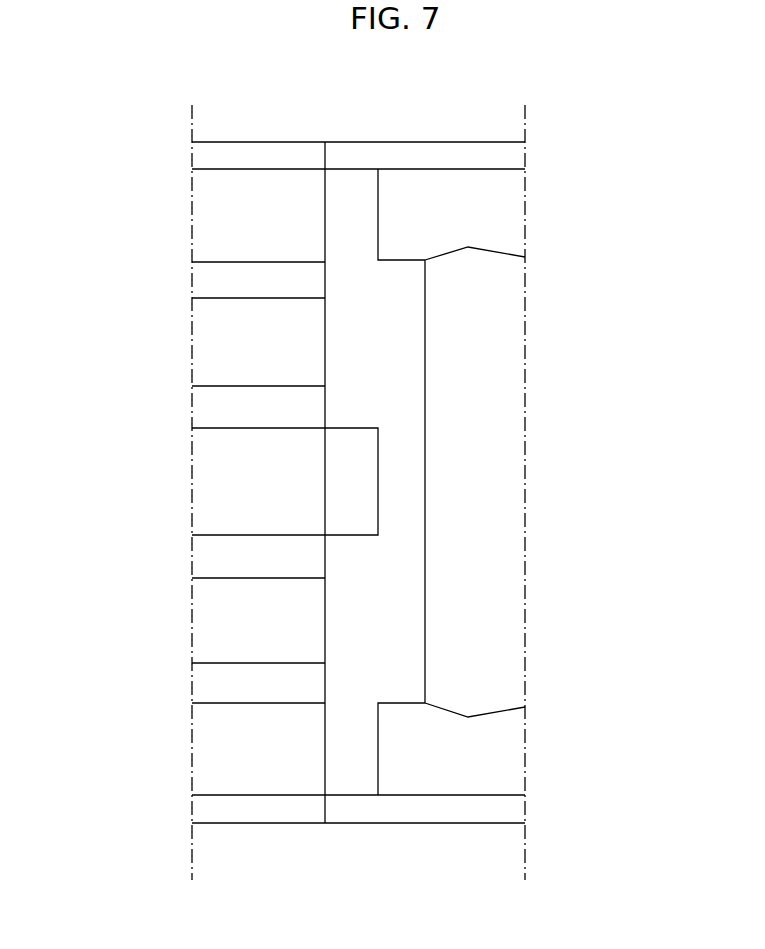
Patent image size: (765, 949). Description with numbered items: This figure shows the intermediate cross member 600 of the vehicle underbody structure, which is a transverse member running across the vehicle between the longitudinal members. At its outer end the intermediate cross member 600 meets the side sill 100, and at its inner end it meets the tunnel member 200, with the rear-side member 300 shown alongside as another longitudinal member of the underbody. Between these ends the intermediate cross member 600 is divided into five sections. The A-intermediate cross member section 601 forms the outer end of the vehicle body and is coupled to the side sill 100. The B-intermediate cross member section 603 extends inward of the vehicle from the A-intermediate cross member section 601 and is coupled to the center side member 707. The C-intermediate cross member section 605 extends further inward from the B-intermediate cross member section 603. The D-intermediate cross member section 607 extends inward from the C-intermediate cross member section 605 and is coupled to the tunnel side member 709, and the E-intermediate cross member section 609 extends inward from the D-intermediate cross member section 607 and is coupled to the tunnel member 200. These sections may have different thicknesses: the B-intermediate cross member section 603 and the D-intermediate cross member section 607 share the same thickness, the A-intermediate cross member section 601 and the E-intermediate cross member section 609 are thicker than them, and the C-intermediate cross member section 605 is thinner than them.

The side sill 100 is at (207, 155).
The tunnel member 200 is at (220, 482).
The rear-side member 300 is at (492, 217).
The intermediate cross member 600 is at (353, 793).
The A-intermediate cross member section 601 is at (351, 482).
The B-intermediate cross member section 603 is at (375, 482).
The C-intermediate cross member section 605 is at (375, 480).
The D-intermediate cross member section 607 is at (375, 482).
The E-intermediate cross member section 609 is at (404, 481).
The center side member 707 is at (222, 282).
The tunnel side member 709 is at (212, 405).